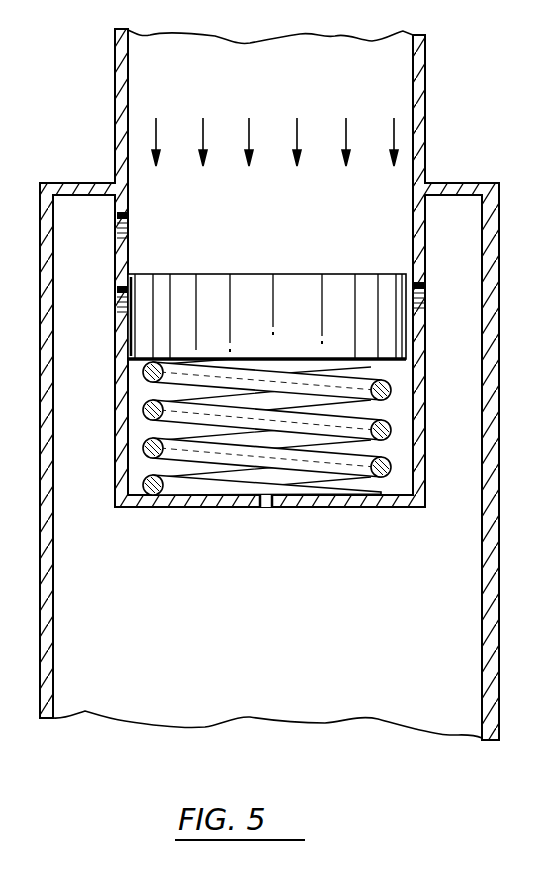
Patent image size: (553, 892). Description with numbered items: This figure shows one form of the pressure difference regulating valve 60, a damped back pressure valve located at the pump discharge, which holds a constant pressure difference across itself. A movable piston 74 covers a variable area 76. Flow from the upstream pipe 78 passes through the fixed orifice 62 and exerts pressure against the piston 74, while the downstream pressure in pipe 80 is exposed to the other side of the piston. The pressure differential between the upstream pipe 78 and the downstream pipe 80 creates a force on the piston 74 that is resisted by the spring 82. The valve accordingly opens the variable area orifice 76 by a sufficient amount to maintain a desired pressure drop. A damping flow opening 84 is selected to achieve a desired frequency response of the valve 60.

The pressure difference regulating valve 60 is at (446, 154).
The fixed orifice 62 is at (127, 233).
The movable piston 74 is at (296, 273).
The variable area orifice 76 is at (121, 326).
The upstream pipe 78 is at (273, 82).
The downstream pipe 80 is at (273, 618).
The spring 82 is at (390, 428).
The damping flow opening 84 is at (271, 501).